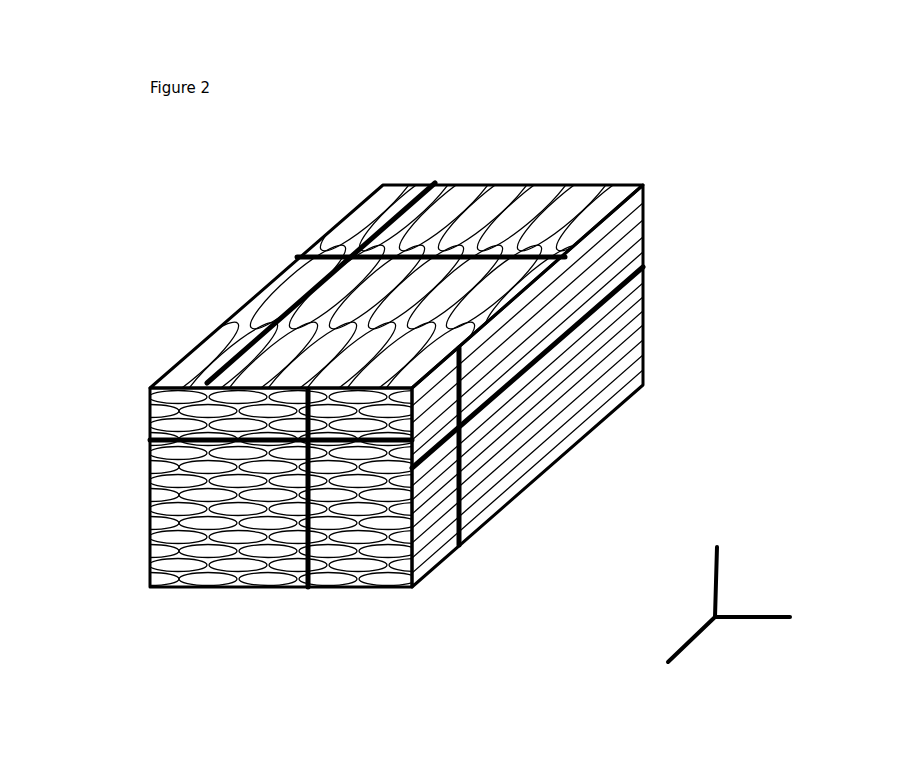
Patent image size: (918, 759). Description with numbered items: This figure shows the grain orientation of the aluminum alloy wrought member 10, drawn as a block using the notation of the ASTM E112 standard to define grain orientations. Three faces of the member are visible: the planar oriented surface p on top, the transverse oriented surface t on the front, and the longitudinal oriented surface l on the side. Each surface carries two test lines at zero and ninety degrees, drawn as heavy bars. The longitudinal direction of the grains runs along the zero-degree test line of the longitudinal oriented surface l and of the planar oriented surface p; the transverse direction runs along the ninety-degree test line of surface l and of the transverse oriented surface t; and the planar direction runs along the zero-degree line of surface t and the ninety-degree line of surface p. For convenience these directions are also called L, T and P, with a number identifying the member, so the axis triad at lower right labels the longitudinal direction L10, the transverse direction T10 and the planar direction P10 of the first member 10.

The aluminum alloy wrought member 10 is at (448, 195).
The planar oriented surface p is at (553, 200).
The transverse oriented surface t is at (220, 520).
The longitudinal oriented surface l is at (617, 250).
The transverse direction of the first member T10 is at (712, 574).
The planar direction of the first member P10 is at (772, 625).
The longitudinal direction of the first member L10 is at (676, 655).